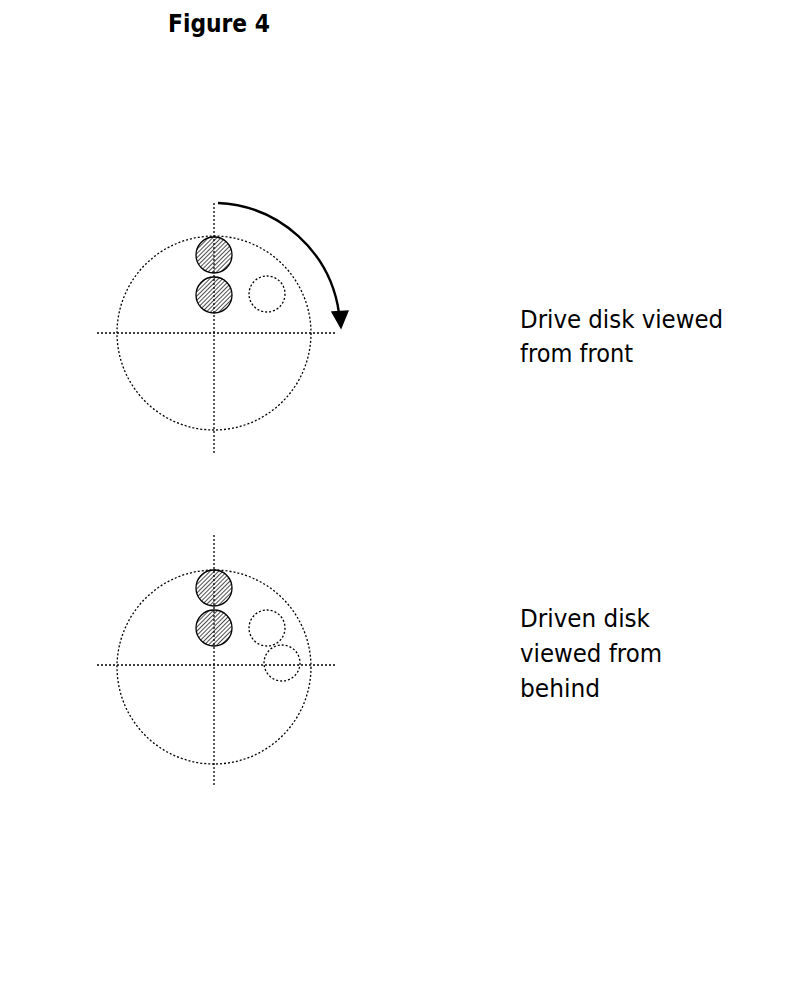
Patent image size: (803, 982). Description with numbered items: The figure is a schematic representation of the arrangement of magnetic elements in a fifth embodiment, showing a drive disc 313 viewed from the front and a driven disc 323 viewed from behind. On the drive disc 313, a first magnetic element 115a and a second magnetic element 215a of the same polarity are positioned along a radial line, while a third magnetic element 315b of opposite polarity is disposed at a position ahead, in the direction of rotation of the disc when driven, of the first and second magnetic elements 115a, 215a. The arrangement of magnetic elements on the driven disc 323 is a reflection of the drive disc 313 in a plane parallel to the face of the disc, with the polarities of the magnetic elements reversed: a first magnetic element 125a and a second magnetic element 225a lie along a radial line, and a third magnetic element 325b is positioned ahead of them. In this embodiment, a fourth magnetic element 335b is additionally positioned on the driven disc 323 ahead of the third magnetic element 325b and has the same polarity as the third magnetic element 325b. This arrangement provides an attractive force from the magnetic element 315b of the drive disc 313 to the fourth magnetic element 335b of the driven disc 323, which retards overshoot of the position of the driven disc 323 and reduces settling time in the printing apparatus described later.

The first magnetic element 115a is at (205, 240).
The second magnetic element 215a is at (200, 295).
The third magnetic element 315b is at (277, 291).
The drive disc 313 is at (147, 367).
The first magnetic element of the driven disc 125a is at (198, 588).
The second magnetic element of the driven disc 225a is at (200, 628).
The third magnetic element of the driven disc 325b is at (273, 622).
The fourth magnetic element 335b is at (287, 660).
The driven disc 323 is at (163, 720).